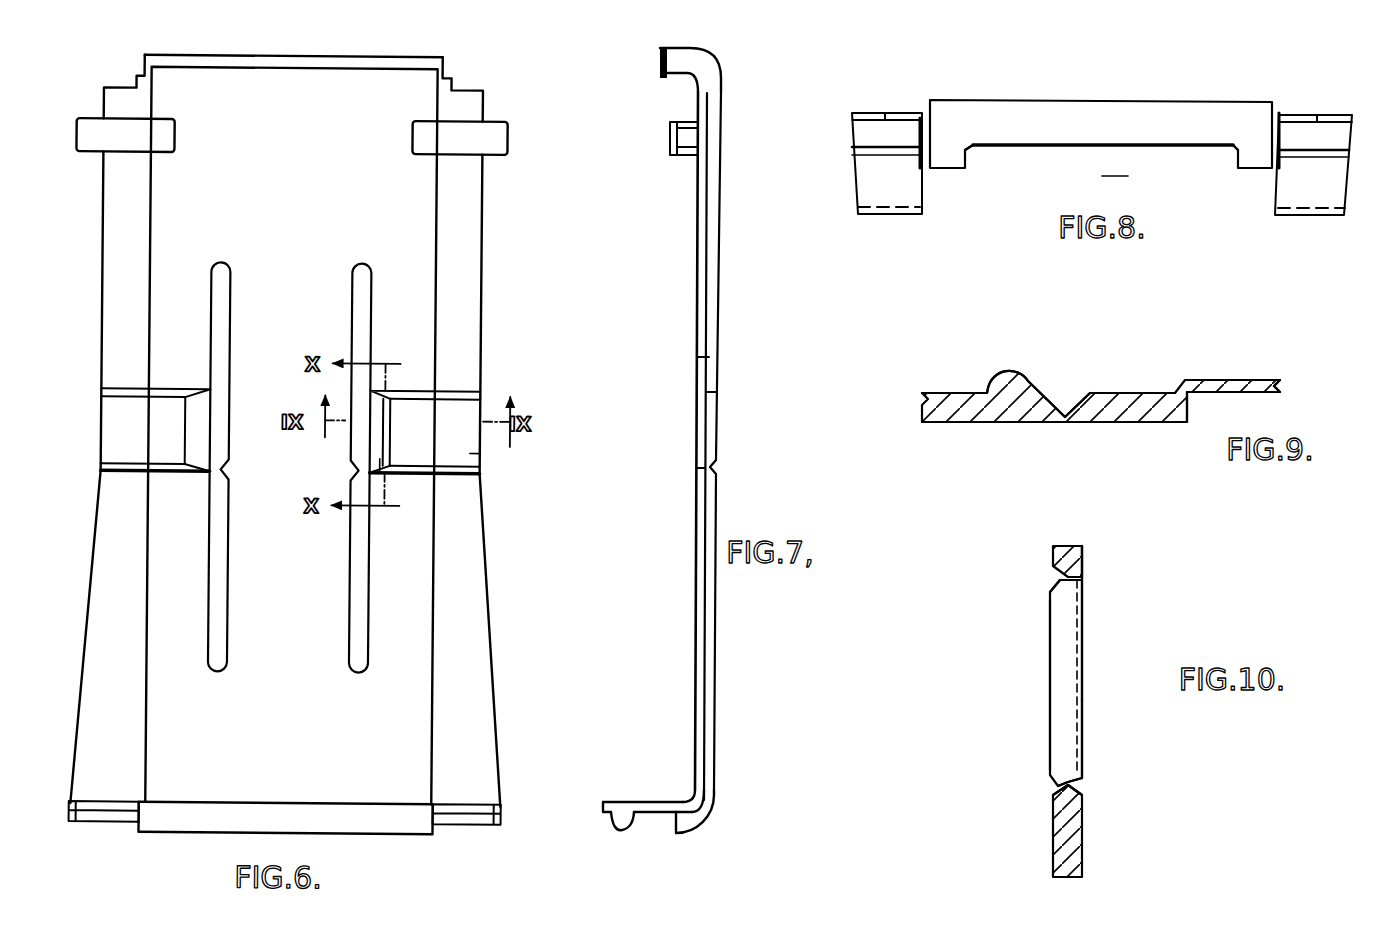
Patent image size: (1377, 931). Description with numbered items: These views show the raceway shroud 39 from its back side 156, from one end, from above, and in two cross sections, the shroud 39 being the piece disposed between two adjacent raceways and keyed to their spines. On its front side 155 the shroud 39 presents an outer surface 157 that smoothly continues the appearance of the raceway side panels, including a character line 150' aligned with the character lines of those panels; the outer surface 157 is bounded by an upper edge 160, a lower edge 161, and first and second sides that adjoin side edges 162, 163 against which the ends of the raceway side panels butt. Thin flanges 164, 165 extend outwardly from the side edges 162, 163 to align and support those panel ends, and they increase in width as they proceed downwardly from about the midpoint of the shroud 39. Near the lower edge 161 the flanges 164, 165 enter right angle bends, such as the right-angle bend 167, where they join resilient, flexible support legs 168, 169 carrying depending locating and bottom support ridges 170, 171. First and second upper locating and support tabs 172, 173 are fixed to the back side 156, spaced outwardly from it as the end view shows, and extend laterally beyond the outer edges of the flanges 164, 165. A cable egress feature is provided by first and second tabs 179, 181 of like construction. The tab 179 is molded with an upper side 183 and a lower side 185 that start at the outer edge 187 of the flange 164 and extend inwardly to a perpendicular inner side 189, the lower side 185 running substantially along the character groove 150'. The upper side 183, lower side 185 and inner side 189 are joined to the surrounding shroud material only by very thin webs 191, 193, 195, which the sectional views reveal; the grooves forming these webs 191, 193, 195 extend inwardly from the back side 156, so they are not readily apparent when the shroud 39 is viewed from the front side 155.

In FIG. 6, the shroud 39 is at (238, 50).
In FIG. 7, the shroud 39 is at (742, 56).
In FIG. 8, the shroud 39 is at (1115, 167).
In FIG. 10, the character line 150' is at (1103, 799).
In FIG. 7, the front side 155 is at (720, 345).
In FIG. 8, the front side 155 is at (1060, 95).
In FIG. 9, the front side 155 is at (1117, 427).
In FIG. 10, the front side 155 is at (1094, 685).
In FIG. 6, the back side 156 is at (210, 190).
In FIG. 7, the back side 156 is at (692, 282).
In FIG. 8, the back side 156 is at (1068, 150).
In FIG. 9, the back side 156 is at (1058, 376).
In FIG. 10, the back side 156 is at (1045, 718).
In FIG. 7, the outer surface 157 is at (716, 378).
In FIG. 8, the outer surface 157 is at (1183, 95).
In FIG. 9, the outer surface 157 is at (968, 424).
In FIG. 10, the outer surface 157 is at (1083, 610).
In FIG. 6, the upper edge 160 is at (361, 52).
In FIG. 7, the upper edge 160 is at (668, 47).
In FIG. 6, the lower edge 161 is at (160, 836).
In FIG. 7, the lower edge 161 is at (690, 833).
In FIG. 7, the side edge 162 is at (697, 357).
In FIG. 8, the side edge 162 is at (1279, 108).
In FIG. 8, the side edge 163 is at (925, 103).
In FIG. 6, the flange 164 is at (481, 324).
In FIG. 7, the flange 164 is at (707, 297).
In FIG. 8, the flange 164 is at (1328, 113).
In FIG. 9, the flange 164 is at (1228, 381).
In FIG. 6, the flange 165 is at (100, 314).
In FIG. 8, the flange 165 is at (873, 112).
In FIG. 7, the right-angle bend 167 is at (693, 786).
In FIG. 6, the support leg 168 is at (452, 803).
In FIG. 7, the support leg 168 is at (625, 800).
In FIG. 8, the support leg 168 is at (1283, 195).
In FIG. 6, the support leg 169 is at (97, 803).
In FIG. 8, the support leg 169 is at (912, 188).
In FIG. 6, the locating and bottom support ridge 170 is at (465, 822).
In FIG. 7, the locating and bottom support ridge 170 is at (620, 830).
In FIG. 6, the locating and bottom support ridge 171 is at (90, 818).
In FIG. 6, the upper locating and support tab 172 is at (488, 138).
In FIG. 7, the upper locating and support tab 172 is at (670, 134).
In FIG. 8, the upper locating and support tab 172 is at (1318, 152).
In FIG. 6, the upper locating and support tab 173 is at (98, 126).
In FIG. 8, the upper locating and support tab 173 is at (868, 153).
In FIG. 6, the tab 179 is at (470, 471).
In FIG. 9, the tab 179 is at (866, 402).
In FIG. 10, the tab 179 is at (992, 787).
In FIG. 6, the tab 181 is at (118, 420).
In FIG. 6, the upper side 183 is at (465, 394).
In FIG. 10, the upper side 183 is at (1062, 578).
In FIG. 6, the lower side 185 is at (470, 476).
In FIG. 10, the lower side 185 is at (1055, 792).
In FIG. 6, the outer edge 187 is at (480, 450).
In FIG. 6, the inner side 189 is at (395, 440).
In FIG. 9, the inner side 189 is at (1063, 413).
In FIG. 10, the inner side 189 is at (1083, 730).
In FIG. 6, the web 191 is at (437, 394).
In FIG. 10, the web 191 is at (1083, 572).
In FIG. 6, the web 193 is at (450, 473).
In FIG. 10, the web 193 is at (1080, 780).
In FIG. 6, the web 195 is at (398, 455).
In FIG. 9, the web 195 is at (1067, 423).